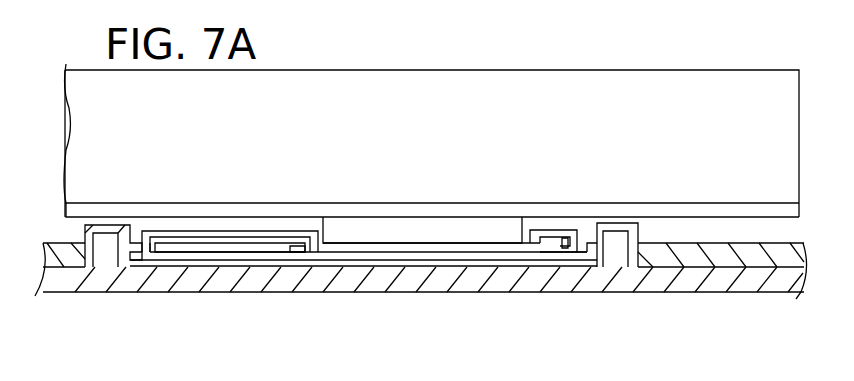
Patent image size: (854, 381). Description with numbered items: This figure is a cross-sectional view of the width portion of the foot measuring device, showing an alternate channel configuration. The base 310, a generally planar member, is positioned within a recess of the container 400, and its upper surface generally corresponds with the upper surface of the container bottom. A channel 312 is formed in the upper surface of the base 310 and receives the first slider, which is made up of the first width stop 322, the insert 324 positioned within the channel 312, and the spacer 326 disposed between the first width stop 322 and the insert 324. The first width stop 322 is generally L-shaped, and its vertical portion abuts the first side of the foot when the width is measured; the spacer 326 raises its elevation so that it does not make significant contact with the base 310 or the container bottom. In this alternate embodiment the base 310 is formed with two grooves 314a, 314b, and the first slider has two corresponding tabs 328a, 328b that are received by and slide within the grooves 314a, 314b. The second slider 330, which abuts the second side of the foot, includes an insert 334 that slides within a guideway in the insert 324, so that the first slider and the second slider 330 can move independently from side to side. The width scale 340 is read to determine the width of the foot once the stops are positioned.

The second slider 330 is at (482, 70).
The first width stop 322 is at (68, 129).
The spacer 326 is at (415, 232).
The width scale 340 is at (205, 232).
The insert 324 is at (240, 245).
The insert 334 is at (300, 253).
The channel 312 is at (203, 260).
The base 310 is at (100, 250).
The groove 314a is at (131, 260).
The tab 328a is at (160, 252).
The tab 328b is at (524, 245).
The groove 314b is at (547, 245).
The container 400 is at (757, 292).